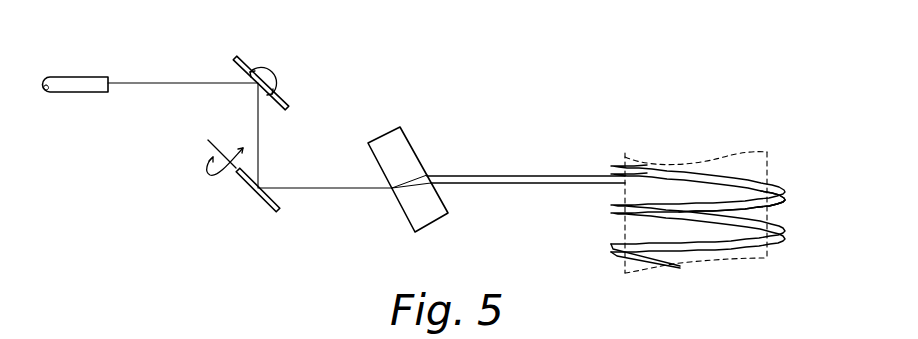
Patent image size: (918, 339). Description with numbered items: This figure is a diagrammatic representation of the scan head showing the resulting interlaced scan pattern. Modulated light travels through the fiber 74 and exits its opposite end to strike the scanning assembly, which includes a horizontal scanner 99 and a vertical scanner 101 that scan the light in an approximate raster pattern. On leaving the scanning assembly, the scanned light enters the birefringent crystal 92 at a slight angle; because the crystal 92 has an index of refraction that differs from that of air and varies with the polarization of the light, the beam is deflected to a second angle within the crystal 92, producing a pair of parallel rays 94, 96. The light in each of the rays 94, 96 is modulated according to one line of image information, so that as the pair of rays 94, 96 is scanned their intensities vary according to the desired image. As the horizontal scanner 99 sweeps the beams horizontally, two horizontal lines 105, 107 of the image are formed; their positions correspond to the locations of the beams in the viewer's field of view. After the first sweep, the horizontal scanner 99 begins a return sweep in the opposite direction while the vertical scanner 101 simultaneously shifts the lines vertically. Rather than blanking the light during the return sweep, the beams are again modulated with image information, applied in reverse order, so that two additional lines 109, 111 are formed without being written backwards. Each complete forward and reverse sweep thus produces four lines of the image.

The fiber 74 is at (74, 93).
The horizontal scanner 99 is at (254, 69).
The vertical scanner 101 is at (255, 196).
The birefringent crystal 92 is at (405, 130).
The ray 94 is at (527, 175).
The ray 96 is at (512, 184).
The horizontal line 105 is at (706, 182).
The horizontal line 107 is at (672, 183).
The additional line 109 is at (718, 198).
The additional line 111 is at (753, 205).